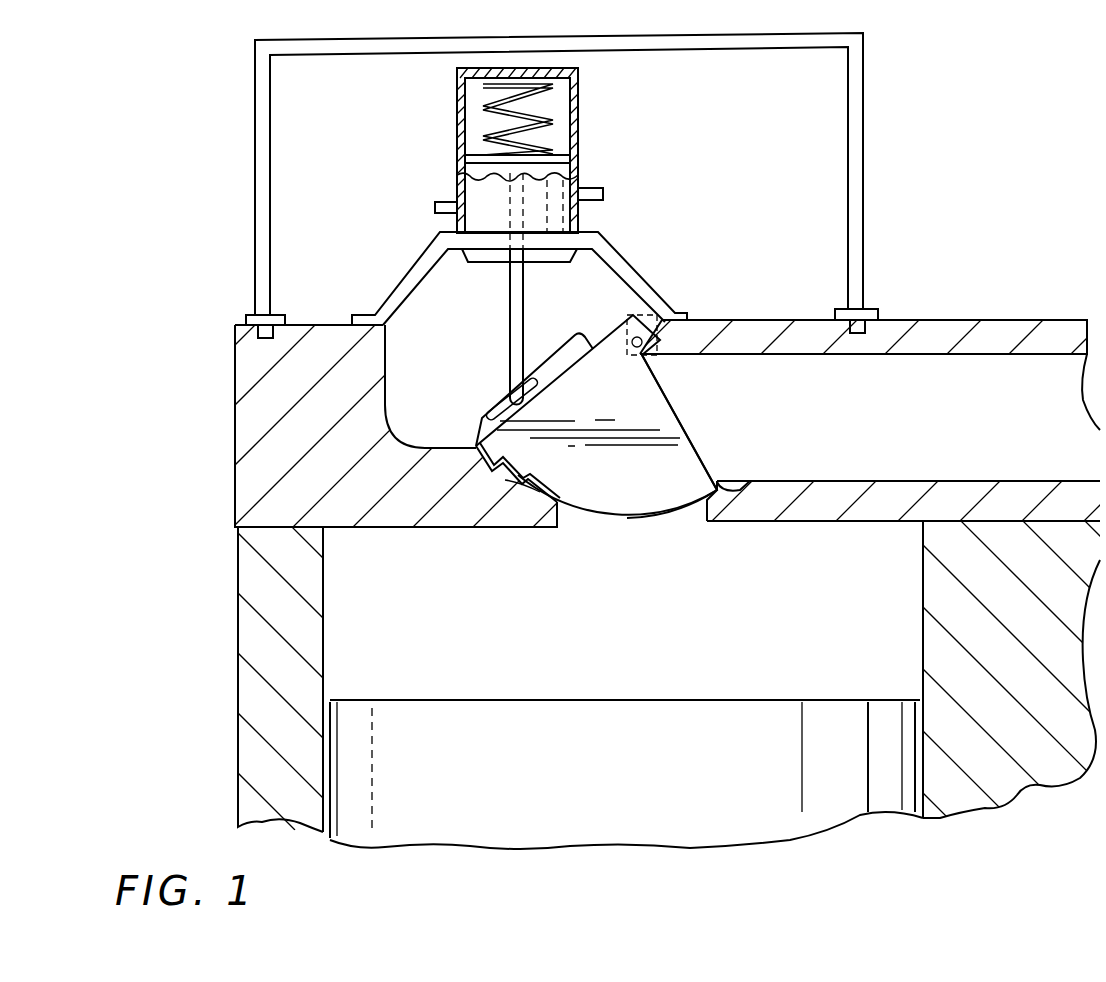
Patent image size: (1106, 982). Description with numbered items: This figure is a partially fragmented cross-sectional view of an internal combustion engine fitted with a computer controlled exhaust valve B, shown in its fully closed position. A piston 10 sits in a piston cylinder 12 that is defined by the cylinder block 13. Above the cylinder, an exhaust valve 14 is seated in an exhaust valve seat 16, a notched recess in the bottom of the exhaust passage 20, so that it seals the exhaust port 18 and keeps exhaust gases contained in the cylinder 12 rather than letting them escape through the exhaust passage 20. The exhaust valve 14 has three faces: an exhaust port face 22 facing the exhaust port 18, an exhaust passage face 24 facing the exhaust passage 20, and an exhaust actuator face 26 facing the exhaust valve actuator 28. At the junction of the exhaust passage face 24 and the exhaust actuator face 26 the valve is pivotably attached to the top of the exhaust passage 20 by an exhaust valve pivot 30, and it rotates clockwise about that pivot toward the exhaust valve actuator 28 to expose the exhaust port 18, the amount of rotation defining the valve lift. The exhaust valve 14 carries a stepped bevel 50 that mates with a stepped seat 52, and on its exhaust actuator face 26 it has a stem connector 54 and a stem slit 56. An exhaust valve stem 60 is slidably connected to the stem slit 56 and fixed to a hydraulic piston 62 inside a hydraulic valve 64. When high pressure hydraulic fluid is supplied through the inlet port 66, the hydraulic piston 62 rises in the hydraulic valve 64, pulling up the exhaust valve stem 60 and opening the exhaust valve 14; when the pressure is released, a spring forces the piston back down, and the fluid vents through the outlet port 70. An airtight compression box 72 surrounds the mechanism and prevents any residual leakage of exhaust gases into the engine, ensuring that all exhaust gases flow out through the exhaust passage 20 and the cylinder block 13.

The piston 10 is at (606, 799).
The piston cylinder 12 is at (608, 656).
The cylinder block 13 is at (1020, 775).
The exhaust valve 14 is at (622, 487).
The exhaust valve seat 16 is at (752, 482).
The exhaust port 18 is at (595, 524).
The exhaust passage 20 is at (902, 428).
The exhaust port face 22 is at (667, 518).
The exhaust passage face 24 is at (680, 420).
The exhaust actuator face 26 is at (630, 340).
The exhaust valve actuator 28 is at (396, 143).
The exhaust valve pivot 30 is at (698, 322).
The stepped bevel 50 is at (505, 480).
The stepped seat 52 is at (474, 480).
The stem connector 54 is at (545, 372).
The stem slit 56 is at (497, 408).
The exhaust valve stem 60 is at (508, 293).
The hydraulic piston 62 is at (470, 178).
The hydraulic valve 64 is at (580, 130).
The inlet port 66 is at (435, 207).
The outlet port 70 is at (605, 195).
The airtight compression box 72 is at (863, 152).
The computer controlled exhaust valve B is at (888, 37).